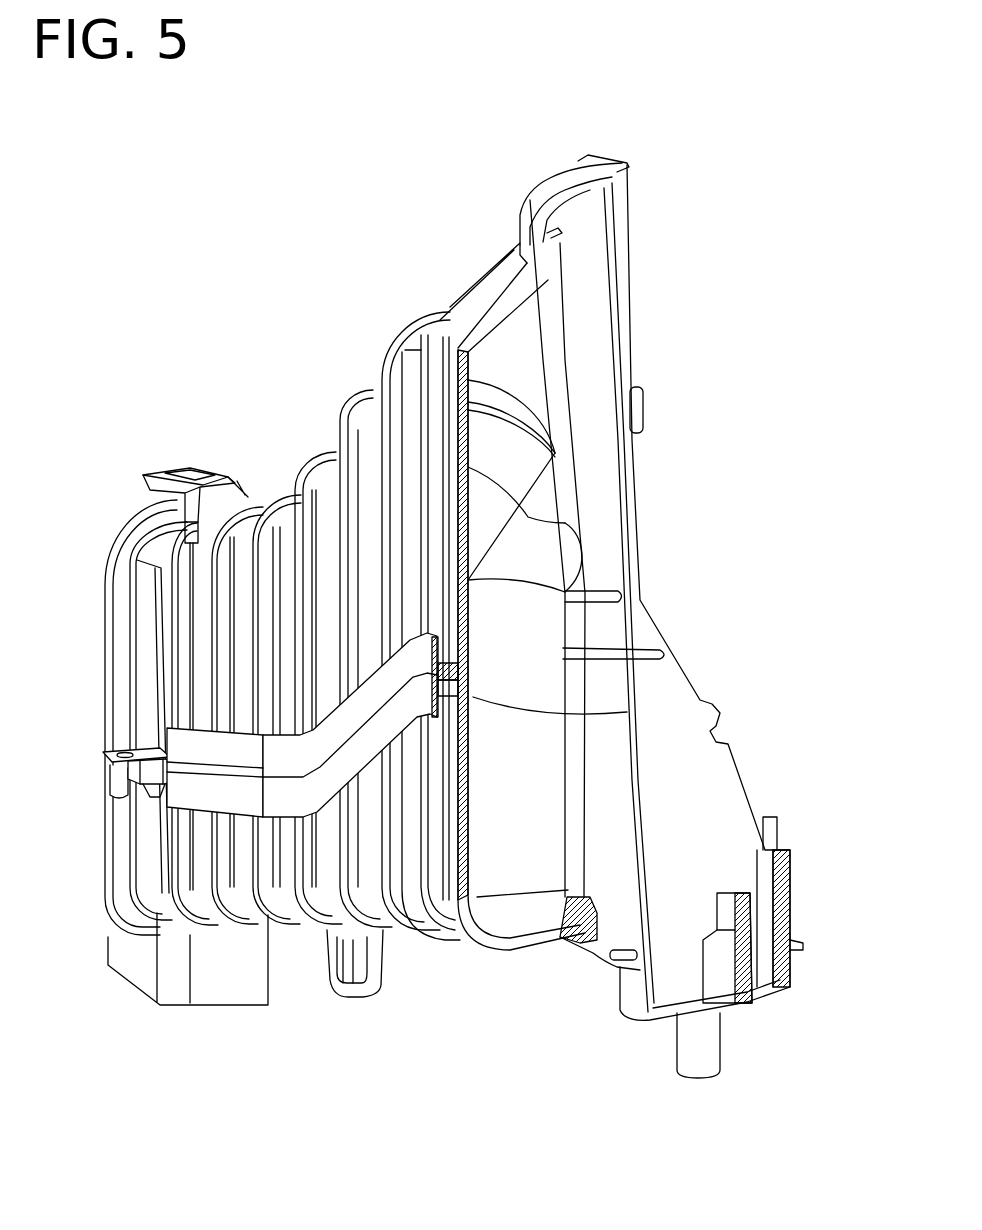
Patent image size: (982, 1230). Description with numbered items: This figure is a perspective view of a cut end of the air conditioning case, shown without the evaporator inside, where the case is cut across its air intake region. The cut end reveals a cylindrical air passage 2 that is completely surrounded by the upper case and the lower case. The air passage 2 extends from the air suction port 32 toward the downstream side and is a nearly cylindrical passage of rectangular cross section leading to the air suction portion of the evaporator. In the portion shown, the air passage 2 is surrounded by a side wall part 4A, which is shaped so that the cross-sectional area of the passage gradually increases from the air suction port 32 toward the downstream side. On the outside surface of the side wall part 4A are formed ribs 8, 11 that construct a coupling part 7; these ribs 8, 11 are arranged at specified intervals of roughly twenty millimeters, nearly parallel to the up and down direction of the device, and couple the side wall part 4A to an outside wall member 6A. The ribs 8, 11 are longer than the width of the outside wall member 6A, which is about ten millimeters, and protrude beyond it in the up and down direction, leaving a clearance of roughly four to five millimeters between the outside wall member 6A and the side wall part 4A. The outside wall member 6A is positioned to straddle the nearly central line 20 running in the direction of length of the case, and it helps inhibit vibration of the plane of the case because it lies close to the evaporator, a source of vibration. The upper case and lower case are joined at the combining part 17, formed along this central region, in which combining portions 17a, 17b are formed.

The air passage 2 is at (508, 437).
The side wall part 4A is at (455, 542).
The combining part 17 is at (663, 648).
The combining portion 17a is at (467, 653).
The combining portion 17b is at (467, 700).
The air suction port 32 is at (105, 697).
The outside wall member 6A is at (330, 740).
The nearly central line 20 is at (418, 717).
The rib 8 is at (353, 823).
The rib 11 is at (352, 960).
The coupling part 7 is at (348, 961).